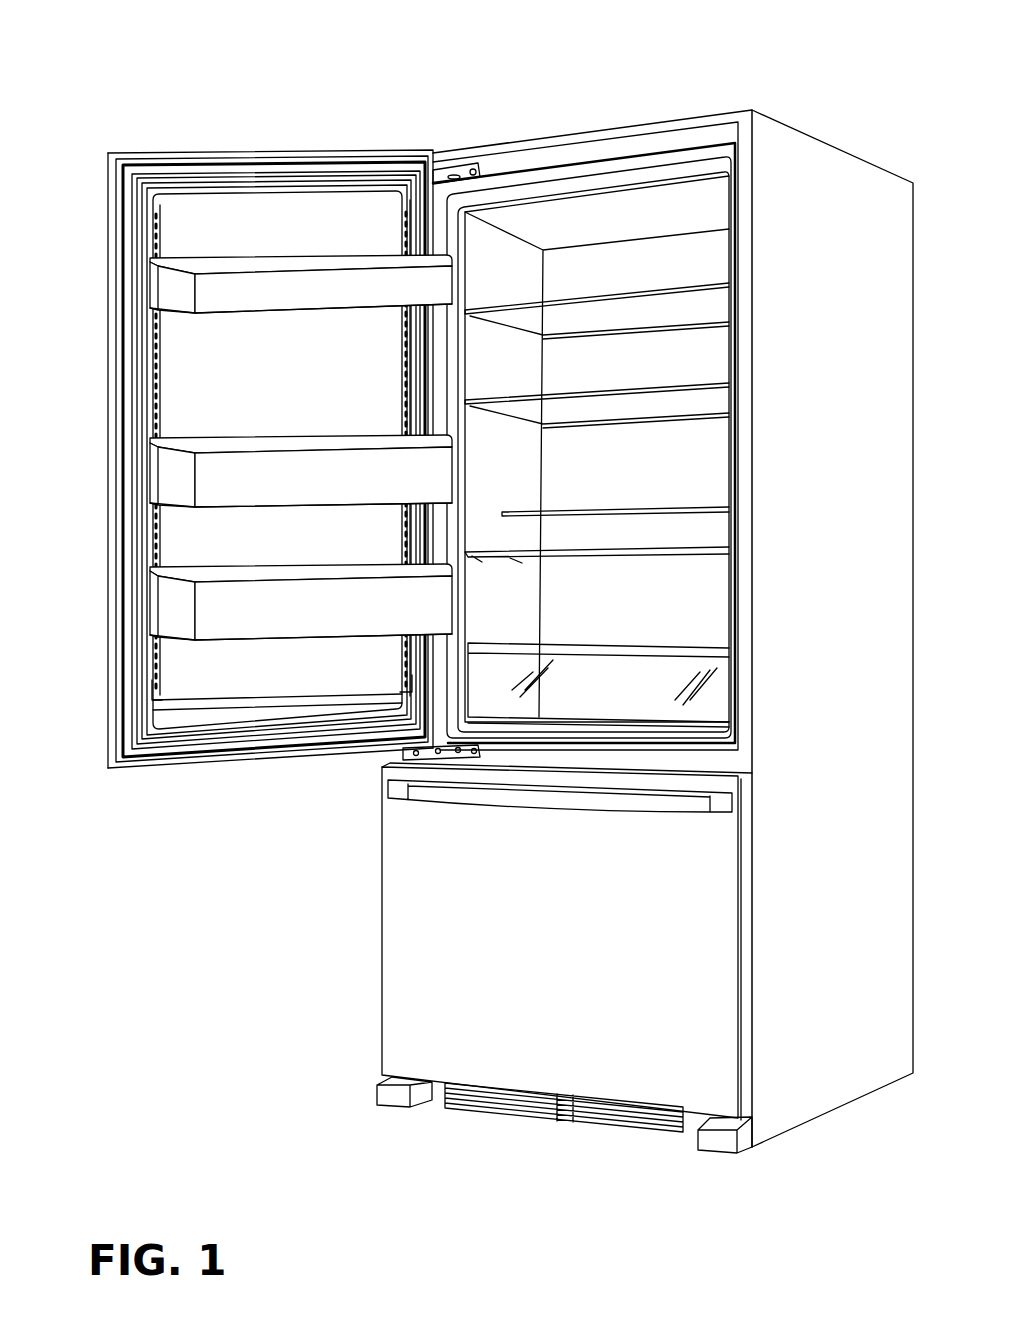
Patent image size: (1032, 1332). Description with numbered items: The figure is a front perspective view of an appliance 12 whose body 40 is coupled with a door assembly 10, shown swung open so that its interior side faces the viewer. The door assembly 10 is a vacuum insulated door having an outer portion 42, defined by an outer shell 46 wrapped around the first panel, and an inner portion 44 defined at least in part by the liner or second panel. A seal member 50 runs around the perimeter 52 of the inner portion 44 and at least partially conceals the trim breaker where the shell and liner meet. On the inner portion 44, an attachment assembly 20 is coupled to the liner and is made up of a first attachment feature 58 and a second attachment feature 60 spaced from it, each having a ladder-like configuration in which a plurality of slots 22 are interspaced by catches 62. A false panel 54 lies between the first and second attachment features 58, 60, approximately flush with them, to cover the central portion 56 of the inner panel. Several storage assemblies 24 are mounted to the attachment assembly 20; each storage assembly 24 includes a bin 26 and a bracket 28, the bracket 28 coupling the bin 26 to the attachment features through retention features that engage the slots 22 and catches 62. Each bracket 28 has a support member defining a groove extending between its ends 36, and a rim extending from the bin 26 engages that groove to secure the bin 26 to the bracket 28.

The door assembly 10 is at (305, 142).
The appliance 12 is at (612, 103).
The attachment assembly 20 is at (143, 537).
The slot 22 is at (152, 333).
The storage assembly 24 is at (357, 240).
The bin 26 is at (298, 305).
The bracket 28 is at (235, 266).
The ends 36 is at (150, 288).
The body 40 is at (837, 150).
The outer portion 42 is at (108, 200).
The inner portion 44 is at (200, 405).
The outer shell 46 is at (122, 243).
The seal member 50 is at (183, 170).
The perimeter 52 is at (348, 160).
The false panel 54 is at (270, 197).
The central portion 56 is at (278, 351).
The first attachment feature 58 is at (402, 678).
The second attachment feature 60 is at (157, 690).
The catches 62 is at (402, 330).